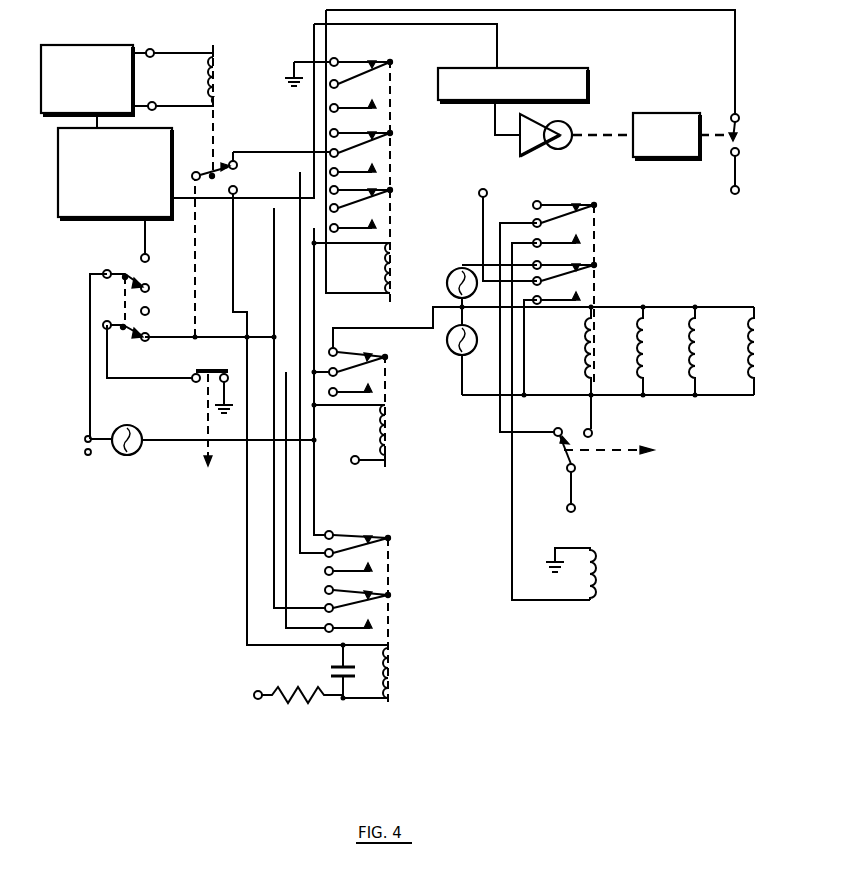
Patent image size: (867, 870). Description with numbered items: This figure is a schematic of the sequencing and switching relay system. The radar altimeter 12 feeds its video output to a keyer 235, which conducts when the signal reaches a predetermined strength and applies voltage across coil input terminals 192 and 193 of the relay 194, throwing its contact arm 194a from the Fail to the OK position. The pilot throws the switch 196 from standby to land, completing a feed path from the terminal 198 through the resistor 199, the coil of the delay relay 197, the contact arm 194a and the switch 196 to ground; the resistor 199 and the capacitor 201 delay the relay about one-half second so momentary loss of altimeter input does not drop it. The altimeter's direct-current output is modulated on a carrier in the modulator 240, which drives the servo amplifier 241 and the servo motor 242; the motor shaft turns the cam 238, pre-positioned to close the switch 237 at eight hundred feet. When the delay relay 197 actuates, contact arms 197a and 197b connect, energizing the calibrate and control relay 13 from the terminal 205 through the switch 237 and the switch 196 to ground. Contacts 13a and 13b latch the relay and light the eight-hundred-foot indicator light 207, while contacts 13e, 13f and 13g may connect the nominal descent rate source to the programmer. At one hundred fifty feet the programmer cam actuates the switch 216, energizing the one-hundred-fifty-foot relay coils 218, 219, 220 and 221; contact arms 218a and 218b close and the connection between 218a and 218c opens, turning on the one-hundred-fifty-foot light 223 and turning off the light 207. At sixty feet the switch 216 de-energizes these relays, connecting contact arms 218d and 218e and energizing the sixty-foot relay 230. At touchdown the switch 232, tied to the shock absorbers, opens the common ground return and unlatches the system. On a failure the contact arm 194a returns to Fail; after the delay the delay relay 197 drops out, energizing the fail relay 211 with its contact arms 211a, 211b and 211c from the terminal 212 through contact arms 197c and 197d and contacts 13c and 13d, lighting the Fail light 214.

The radar altimeter 12 is at (78, 214).
The calibrate and control relay 13 is at (402, 173).
The contact of relay 13 13a is at (365, 226).
The contact of relay 13 13b is at (362, 203).
The contact arm of relay 13 13c is at (362, 136).
The contact arm of relay 13 13d is at (360, 172).
The contact of relay 13 13e is at (368, 108).
The contact of relay 13 13f is at (388, 73).
The contact of relay 13 13g is at (360, 60).
The coil input terminal 192 is at (155, 51).
The coil input terminal 193 is at (157, 105).
The relay 194 is at (252, 115).
The contact arm 194a is at (196, 172).
The switch 196 is at (112, 296).
The delay relay 197 is at (399, 614).
The contact arm 197a is at (370, 600).
The contact arm 197b is at (355, 626).
The contact arm 197c is at (355, 536).
The contact arm 197d is at (358, 548).
The terminal 198 is at (259, 699).
The resistor 199 is at (298, 690).
The capacitor 201 is at (348, 670).
The terminal 205 is at (753, 178).
The 800-foot indicator light 207 is at (449, 287).
The fail relay 211 is at (391, 408).
The contact arm of fail relay 211a is at (360, 392).
The contact arm of fail relay 211b is at (360, 366).
The contact arm of fail relay 211c is at (358, 353).
The terminal 212 is at (353, 465).
The Fail light 214 is at (133, 435).
The switch 216 is at (641, 470).
The 150-foot relay coil 218 is at (649, 298).
The contact arm 218a is at (565, 278).
The contact arm 218b is at (565, 300).
The contact arm 218c is at (565, 266).
The contact arm 218d is at (565, 243).
The contact arm 218e is at (570, 211).
The 150-foot relay coil 219 is at (683, 360).
The 150-foot relay coil 220 is at (738, 360).
The 150-foot relay coil 221 is at (798, 360).
The 150-foot light 223 is at (485, 355).
The 60-foot relay 230 is at (598, 570).
The switch 232 is at (210, 371).
The keyer 235 is at (85, 47).
The switch 237 is at (742, 130).
The cam 238 is at (684, 154).
The modulator 240 is at (574, 101).
The servo amplifier 241 is at (521, 154).
The servo motor 242 is at (564, 149).